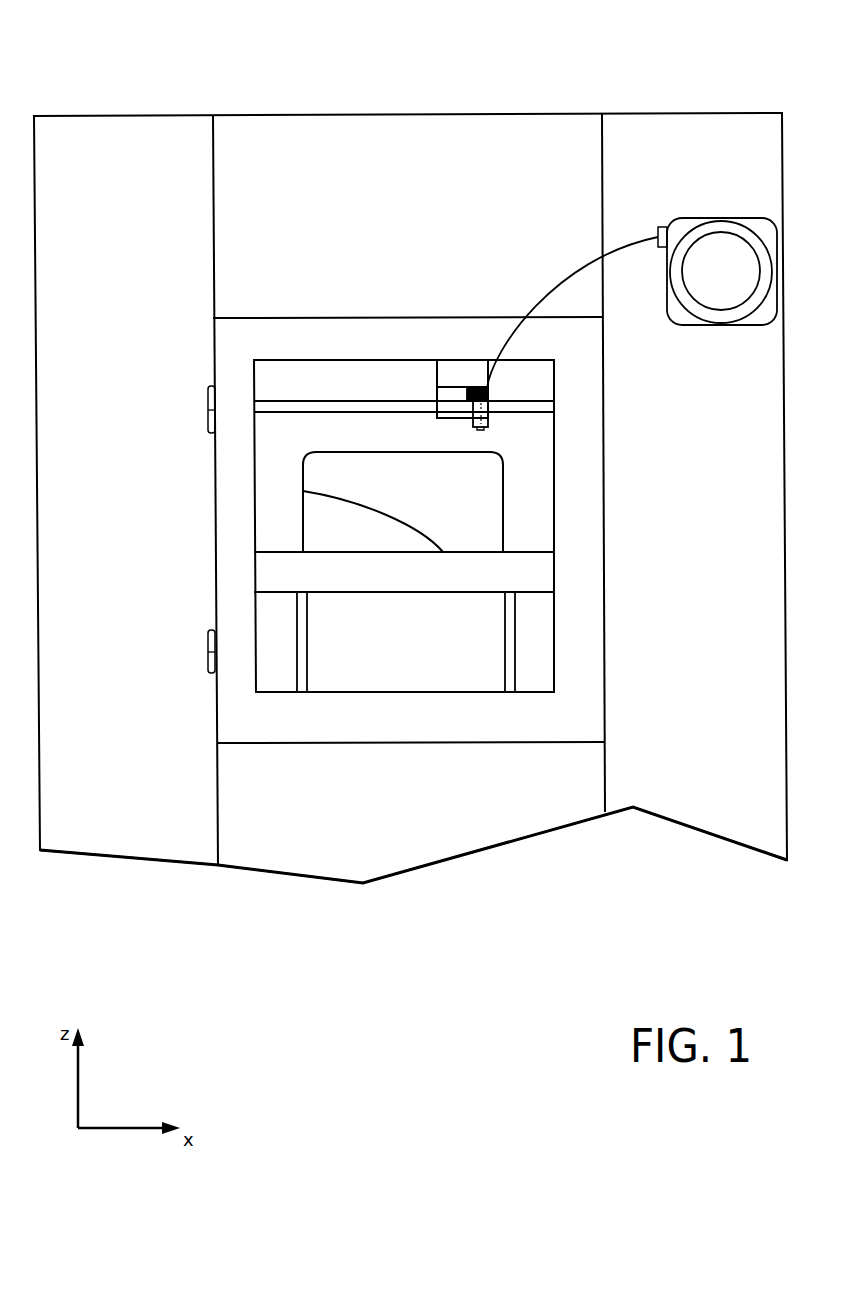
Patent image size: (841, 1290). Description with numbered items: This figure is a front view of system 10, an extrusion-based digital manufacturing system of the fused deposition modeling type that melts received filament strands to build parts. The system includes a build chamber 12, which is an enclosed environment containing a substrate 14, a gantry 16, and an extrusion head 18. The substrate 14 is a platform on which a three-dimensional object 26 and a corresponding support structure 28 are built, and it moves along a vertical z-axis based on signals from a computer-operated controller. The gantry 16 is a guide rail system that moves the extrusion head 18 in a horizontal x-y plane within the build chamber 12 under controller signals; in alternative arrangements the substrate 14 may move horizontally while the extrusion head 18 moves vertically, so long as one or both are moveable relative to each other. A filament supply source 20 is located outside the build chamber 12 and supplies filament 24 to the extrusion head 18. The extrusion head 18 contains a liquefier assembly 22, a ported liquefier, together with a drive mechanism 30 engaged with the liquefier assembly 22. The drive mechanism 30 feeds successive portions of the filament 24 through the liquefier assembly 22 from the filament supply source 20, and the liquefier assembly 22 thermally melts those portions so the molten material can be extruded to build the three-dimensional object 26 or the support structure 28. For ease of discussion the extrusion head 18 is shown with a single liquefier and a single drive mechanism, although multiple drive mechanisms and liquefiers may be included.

The system 10 is at (243, 82).
The build chamber 12 is at (552, 487).
The substrate 14 is at (537, 575).
The gantry 16 is at (320, 407).
The extrusion head 18 is at (510, 374).
The filament supply source 20 is at (688, 222).
The liquefier assembly 22 is at (490, 418).
The filament 24 is at (580, 265).
The 3D object 26 is at (323, 477).
The support structure 28 is at (316, 537).
The drive mechanism 30 is at (474, 388).